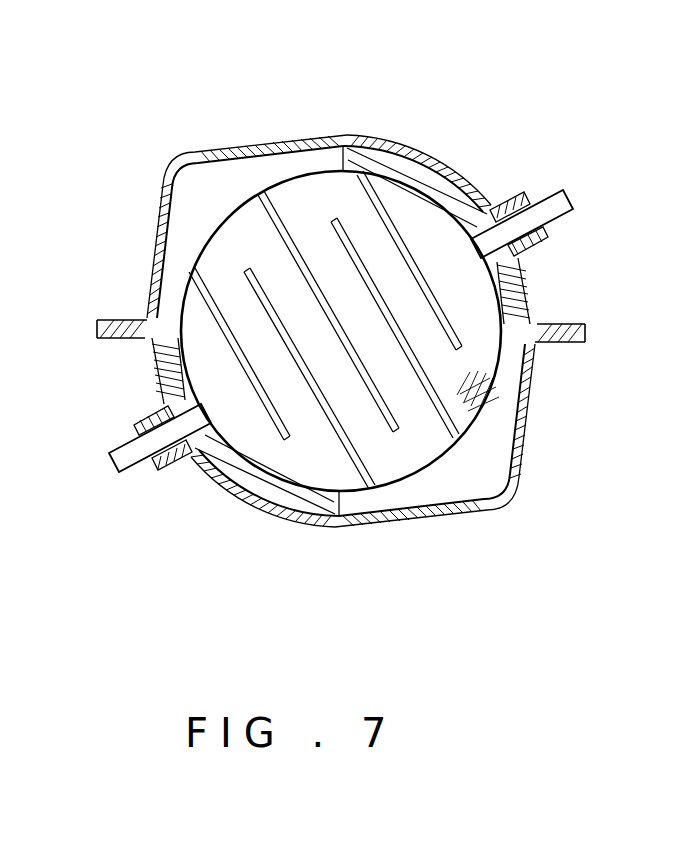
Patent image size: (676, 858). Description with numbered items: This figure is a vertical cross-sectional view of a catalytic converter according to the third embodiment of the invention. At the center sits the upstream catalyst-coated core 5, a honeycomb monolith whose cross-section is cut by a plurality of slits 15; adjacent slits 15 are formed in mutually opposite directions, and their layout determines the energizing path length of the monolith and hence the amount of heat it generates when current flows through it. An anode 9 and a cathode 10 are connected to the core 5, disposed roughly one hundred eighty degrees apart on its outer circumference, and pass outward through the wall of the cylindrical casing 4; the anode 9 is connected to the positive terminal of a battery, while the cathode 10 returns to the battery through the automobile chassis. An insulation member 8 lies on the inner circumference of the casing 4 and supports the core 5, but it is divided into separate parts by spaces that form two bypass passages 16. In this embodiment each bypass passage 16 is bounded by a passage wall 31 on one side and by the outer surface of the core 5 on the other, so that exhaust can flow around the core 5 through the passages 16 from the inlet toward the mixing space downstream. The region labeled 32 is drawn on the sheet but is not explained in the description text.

The casing 4 is at (118, 317).
The upstream catalyst-coated core 5 is at (302, 193).
The insulation member 8 is at (403, 168).
The anode 9 is at (540, 182).
The cathode 10 is at (133, 463).
The slits 15 is at (187, 292).
The bypass passages 16 is at (202, 190).
The passage wall 31 is at (163, 168).
The arcuate housing wall 32 is at (453, 177).